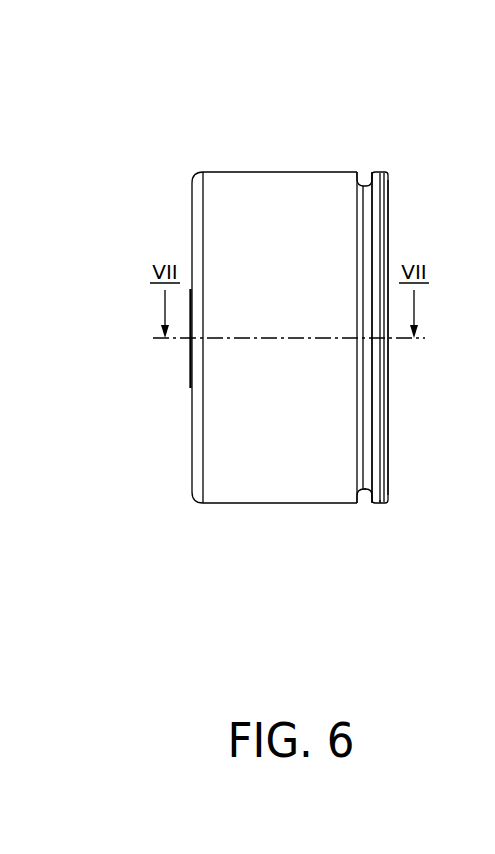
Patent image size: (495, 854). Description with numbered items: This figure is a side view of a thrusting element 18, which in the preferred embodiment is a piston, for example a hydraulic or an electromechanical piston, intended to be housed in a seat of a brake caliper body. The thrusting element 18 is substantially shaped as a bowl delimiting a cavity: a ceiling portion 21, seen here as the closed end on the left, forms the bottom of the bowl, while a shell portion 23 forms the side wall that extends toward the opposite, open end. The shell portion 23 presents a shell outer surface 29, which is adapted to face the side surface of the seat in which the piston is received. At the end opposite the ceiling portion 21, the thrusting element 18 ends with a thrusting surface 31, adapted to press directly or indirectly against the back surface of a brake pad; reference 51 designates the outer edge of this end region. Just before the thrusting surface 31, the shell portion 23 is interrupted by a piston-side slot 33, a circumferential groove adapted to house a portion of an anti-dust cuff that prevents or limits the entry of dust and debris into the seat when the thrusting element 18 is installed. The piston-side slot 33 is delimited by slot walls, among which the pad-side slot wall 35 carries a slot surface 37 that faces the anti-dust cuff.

The thrusting element 18 is at (283, 322).
The shell outer surface 29 is at (301, 210).
The shell portion 23 is at (266, 470).
The ceiling portion 21 is at (190, 388).
The piston-side slot 33 is at (378, 167).
The thrusting surface 31 is at (390, 184).
The outer edge of flange 51 is at (390, 219).
The slot surface 37 is at (374, 496).
The pad-side slot wall 35 is at (385, 503).